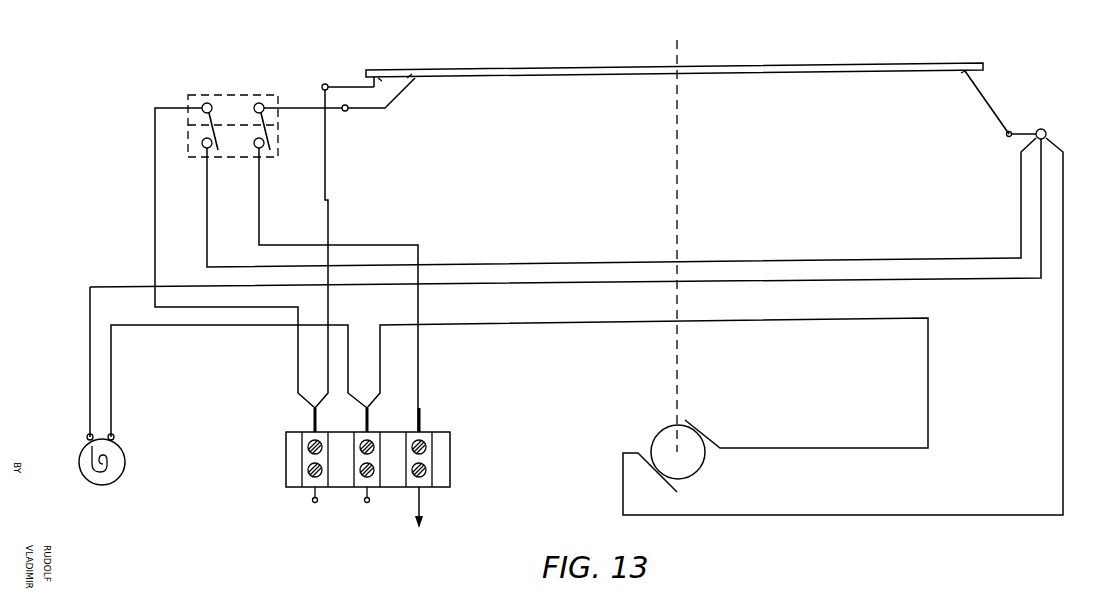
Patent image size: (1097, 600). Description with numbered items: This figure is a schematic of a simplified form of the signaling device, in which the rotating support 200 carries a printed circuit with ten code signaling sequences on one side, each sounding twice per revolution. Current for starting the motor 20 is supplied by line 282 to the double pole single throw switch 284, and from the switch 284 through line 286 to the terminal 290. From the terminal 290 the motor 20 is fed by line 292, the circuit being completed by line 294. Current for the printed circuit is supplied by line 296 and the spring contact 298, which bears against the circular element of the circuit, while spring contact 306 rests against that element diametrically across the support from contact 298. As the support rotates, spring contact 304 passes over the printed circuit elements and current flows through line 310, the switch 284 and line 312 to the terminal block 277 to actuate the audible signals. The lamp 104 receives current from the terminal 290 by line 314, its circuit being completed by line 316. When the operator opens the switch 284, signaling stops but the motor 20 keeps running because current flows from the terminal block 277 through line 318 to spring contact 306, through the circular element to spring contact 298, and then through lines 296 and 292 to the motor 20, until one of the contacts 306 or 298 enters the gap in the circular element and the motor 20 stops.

The motor 20 is at (702, 474).
The lamp 104 is at (126, 464).
The rotating support member 200 is at (591, 61).
The terminal block 277 is at (448, 437).
The line 282 is at (157, 235).
The double pole single throw switch 284 is at (222, 84).
The line 286 is at (210, 257).
The terminal 290 is at (1046, 130).
The line 292 is at (1063, 365).
The line 294 is at (598, 325).
The line 296 is at (1014, 140).
The spring contact 298 is at (994, 104).
The spring contact 304 is at (397, 93).
The spring contact 306 is at (331, 85).
The line 310 is at (302, 107).
The line 312 is at (291, 245).
The line 314 is at (880, 280).
The line 316 is at (207, 326).
The line 318 is at (329, 222).